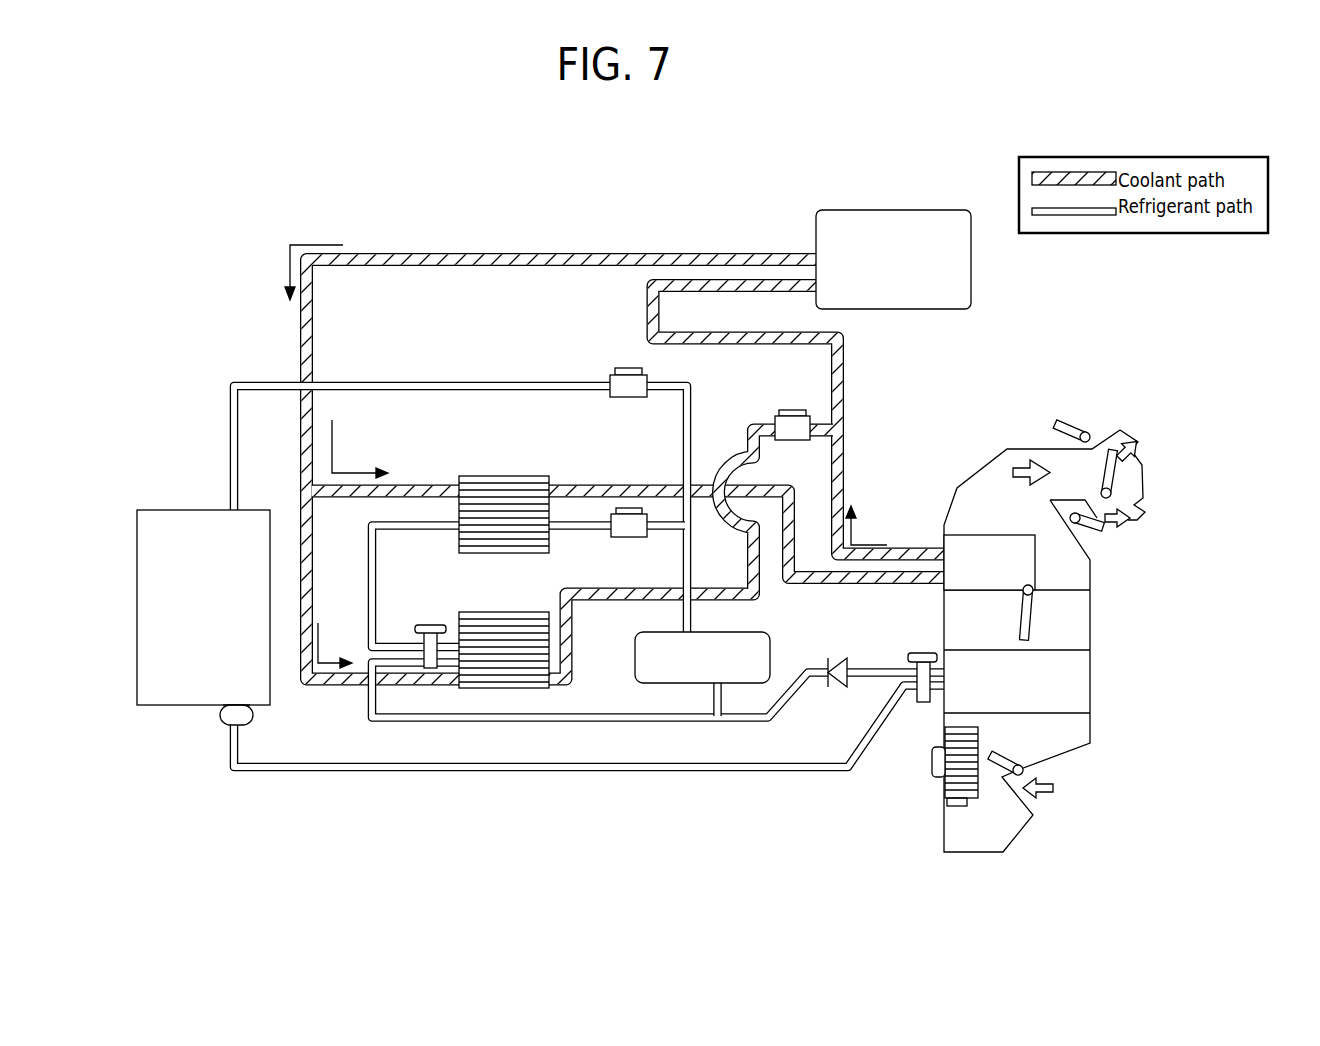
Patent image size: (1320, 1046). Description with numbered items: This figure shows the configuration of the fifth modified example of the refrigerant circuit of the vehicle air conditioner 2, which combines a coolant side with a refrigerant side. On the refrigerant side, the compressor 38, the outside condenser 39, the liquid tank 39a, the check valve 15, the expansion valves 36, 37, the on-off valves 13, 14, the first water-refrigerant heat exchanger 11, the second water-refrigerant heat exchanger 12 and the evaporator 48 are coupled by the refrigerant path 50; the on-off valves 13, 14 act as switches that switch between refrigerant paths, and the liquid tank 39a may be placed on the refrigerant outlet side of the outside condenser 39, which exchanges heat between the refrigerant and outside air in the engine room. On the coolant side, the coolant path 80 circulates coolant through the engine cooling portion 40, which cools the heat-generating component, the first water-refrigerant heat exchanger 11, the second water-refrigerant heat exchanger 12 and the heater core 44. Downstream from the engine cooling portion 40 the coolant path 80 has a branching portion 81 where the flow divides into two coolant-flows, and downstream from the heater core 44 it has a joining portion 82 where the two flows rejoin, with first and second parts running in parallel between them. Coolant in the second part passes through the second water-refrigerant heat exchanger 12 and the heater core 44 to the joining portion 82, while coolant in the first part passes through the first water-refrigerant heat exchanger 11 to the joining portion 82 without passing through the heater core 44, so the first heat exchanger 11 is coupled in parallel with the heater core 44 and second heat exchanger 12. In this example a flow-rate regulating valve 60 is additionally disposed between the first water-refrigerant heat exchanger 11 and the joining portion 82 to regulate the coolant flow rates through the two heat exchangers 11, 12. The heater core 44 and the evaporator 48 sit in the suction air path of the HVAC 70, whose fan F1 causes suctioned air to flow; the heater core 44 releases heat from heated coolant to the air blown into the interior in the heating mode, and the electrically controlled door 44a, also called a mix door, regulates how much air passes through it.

The vehicle air conditioner 2 is at (641, 221).
The first water-refrigerant heat exchanger 11 is at (504, 612).
The second water-refrigerant heat exchanger 12 is at (504, 476).
The on-off valve 13 is at (628, 398).
The on-off valve 14 is at (628, 538).
The check valve 15 is at (841, 658).
The expansion valve 36 is at (430, 625).
The expansion valve 37 is at (920, 653).
The compressor 38 is at (771, 650).
The outside condenser 39 is at (205, 508).
The liquid tank 39a is at (219, 715).
The engine cooling portion 40 is at (893, 209).
The heater core 44 is at (993, 534).
The door 44a is at (1033, 609).
The evaporator 48 is at (1091, 682).
The refrigerant path 50 is at (578, 722).
The flow-rate regulating valve 60 is at (792, 411).
The HVAC 70 is at (1091, 568).
The coolant path 80 is at (553, 253).
The branching portion 81 is at (305, 493).
The joining portion 82 is at (845, 431).
The fan F1 is at (963, 806).